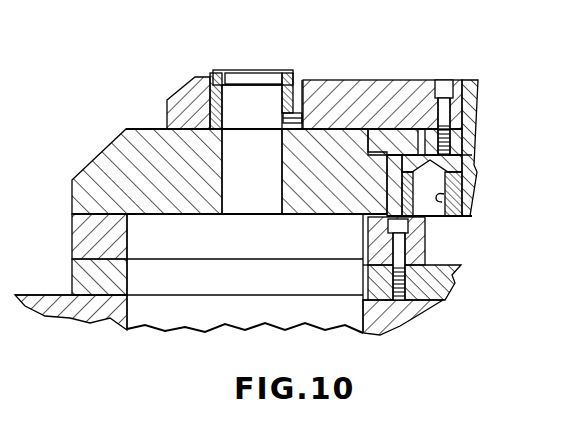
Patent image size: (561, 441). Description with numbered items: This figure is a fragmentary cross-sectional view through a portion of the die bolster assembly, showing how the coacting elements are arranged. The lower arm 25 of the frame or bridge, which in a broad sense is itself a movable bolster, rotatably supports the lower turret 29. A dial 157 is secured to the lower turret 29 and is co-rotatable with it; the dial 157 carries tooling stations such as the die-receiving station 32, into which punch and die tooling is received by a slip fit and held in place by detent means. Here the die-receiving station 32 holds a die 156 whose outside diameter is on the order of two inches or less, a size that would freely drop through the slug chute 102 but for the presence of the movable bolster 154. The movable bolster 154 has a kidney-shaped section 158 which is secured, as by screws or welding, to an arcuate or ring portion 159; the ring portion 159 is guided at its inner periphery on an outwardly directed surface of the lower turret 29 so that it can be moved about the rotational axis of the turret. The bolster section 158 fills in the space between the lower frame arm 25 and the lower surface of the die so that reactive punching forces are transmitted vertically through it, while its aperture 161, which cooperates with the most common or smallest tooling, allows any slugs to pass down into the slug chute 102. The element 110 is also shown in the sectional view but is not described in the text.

The lower arm 25 is at (390, 310).
The lower turret 29 is at (478, 84).
The die-receiving station 32 is at (213, 77).
The slug chute 102 is at (163, 302).
The cavity 110 is at (441, 201).
The movable bolster 154 is at (87, 158).
The die 156 is at (302, 93).
The dial 157 is at (385, 90).
The kidney-shaped section 158 is at (165, 207).
The arcuate or ring portion 159 is at (375, 147).
The aperture 161 is at (222, 202).